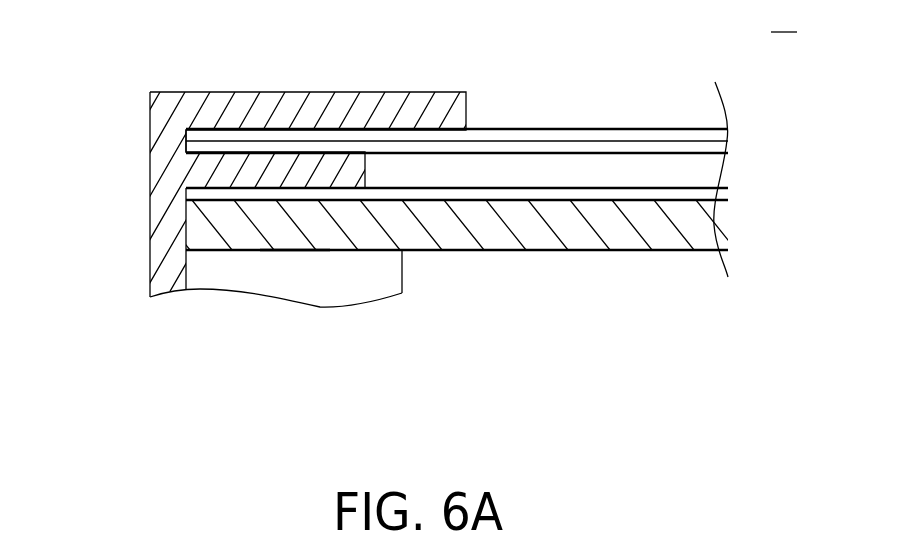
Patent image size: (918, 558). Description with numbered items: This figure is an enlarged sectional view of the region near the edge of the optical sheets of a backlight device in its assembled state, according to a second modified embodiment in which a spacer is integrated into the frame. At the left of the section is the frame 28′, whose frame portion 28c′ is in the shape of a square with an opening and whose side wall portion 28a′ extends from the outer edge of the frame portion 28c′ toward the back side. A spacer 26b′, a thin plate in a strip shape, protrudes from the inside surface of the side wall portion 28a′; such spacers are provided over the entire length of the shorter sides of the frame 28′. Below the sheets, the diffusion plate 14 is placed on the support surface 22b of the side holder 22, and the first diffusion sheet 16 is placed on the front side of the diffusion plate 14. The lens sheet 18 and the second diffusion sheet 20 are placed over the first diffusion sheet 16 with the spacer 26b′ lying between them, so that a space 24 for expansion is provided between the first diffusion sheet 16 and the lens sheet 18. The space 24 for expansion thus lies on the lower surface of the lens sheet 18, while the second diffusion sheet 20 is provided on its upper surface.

The diffusion plate 14 is at (531, 250).
The first diffusion sheet 16 is at (605, 192).
The lens sheet 18 is at (582, 147).
The second diffusion sheet 20 is at (647, 130).
The side holder 22 is at (340, 290).
The support surface 22b is at (293, 250).
The space for expansion 24 is at (395, 171).
The spacer 26b′ is at (280, 170).
The frame 28′ is at (147, 167).
The side wall portion 28a′ is at (150, 208).
The frame portion 28c′ is at (220, 98).